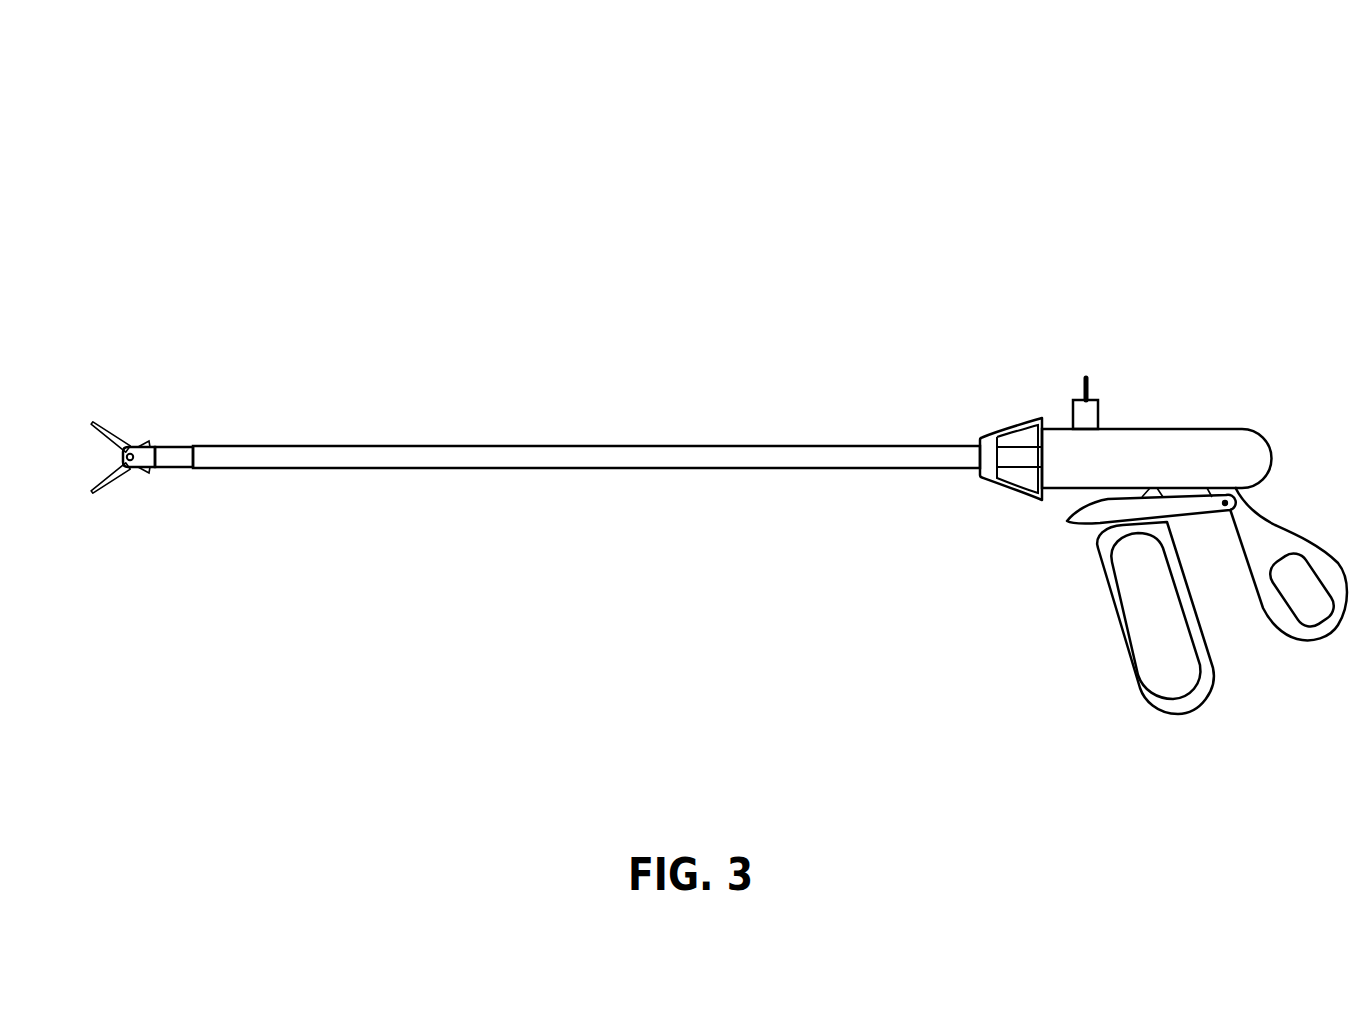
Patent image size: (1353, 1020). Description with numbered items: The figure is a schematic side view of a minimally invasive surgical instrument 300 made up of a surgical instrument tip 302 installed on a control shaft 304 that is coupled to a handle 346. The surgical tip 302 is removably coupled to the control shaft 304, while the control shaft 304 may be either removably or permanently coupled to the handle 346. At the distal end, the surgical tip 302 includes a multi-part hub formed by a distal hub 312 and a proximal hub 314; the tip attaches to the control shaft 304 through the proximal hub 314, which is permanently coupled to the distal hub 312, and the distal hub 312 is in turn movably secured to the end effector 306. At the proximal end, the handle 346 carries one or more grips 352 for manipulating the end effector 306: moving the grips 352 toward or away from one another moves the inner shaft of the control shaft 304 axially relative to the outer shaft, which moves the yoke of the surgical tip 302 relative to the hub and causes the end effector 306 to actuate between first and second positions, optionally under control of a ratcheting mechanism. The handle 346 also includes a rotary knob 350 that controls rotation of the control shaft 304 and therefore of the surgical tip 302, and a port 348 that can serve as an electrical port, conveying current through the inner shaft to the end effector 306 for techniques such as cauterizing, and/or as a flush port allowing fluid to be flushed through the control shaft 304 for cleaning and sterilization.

The minimally invasive surgical instrument 300 is at (116, 128).
The surgical instrument tip 302 is at (156, 368).
The control shaft 304 is at (560, 444).
The end effector 306 is at (108, 489).
The distal hub 312 is at (152, 468).
The proximal hub 314 is at (182, 468).
The handle 346 is at (1180, 429).
The port 348 is at (1083, 388).
The rotary knob 350 is at (1003, 490).
The grips 352 is at (1142, 695).